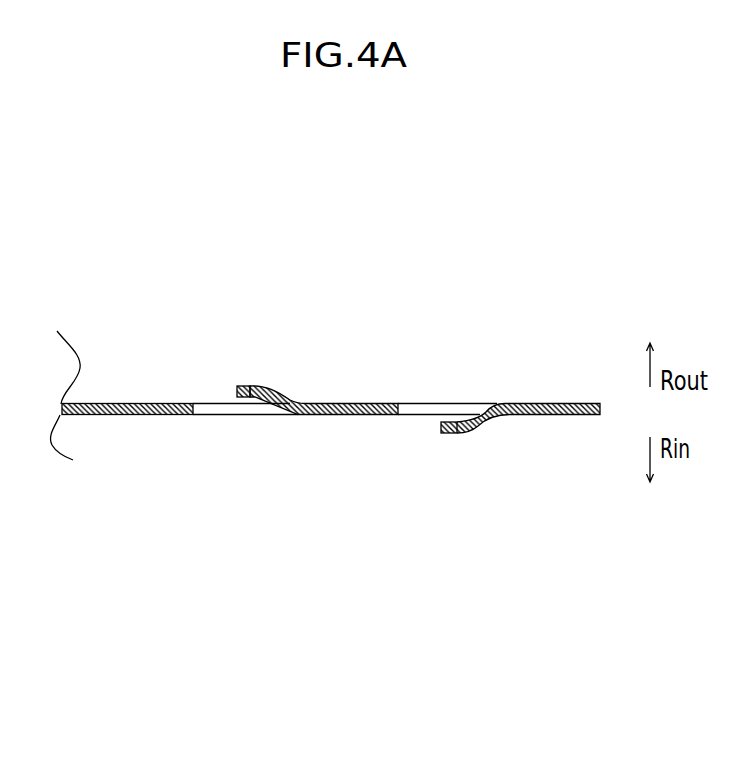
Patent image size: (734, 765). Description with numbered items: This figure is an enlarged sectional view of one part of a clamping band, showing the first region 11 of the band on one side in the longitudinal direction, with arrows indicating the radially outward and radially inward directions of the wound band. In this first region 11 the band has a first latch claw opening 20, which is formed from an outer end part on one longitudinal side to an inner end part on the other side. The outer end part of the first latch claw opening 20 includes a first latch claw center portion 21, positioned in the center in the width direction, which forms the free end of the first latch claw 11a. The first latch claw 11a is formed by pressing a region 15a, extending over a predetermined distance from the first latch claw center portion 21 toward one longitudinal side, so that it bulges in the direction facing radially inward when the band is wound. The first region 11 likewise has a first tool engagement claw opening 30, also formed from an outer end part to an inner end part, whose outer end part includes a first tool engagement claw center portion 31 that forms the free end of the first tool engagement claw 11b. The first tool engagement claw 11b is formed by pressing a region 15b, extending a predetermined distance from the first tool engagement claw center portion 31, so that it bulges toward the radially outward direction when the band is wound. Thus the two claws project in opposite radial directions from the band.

The first region 11 is at (325, 376).
The first latch claw 11a is at (473, 440).
The first tool engagement claw 11b is at (268, 368).
The region 15a is at (490, 430).
The region 15b is at (288, 388).
The first latch claw opening 20 is at (447, 388).
The first latch claw center portion 21 is at (441, 433).
The first tool engagement claw opening 30 is at (252, 425).
The first tool engagement claw center portion 31 is at (237, 388).